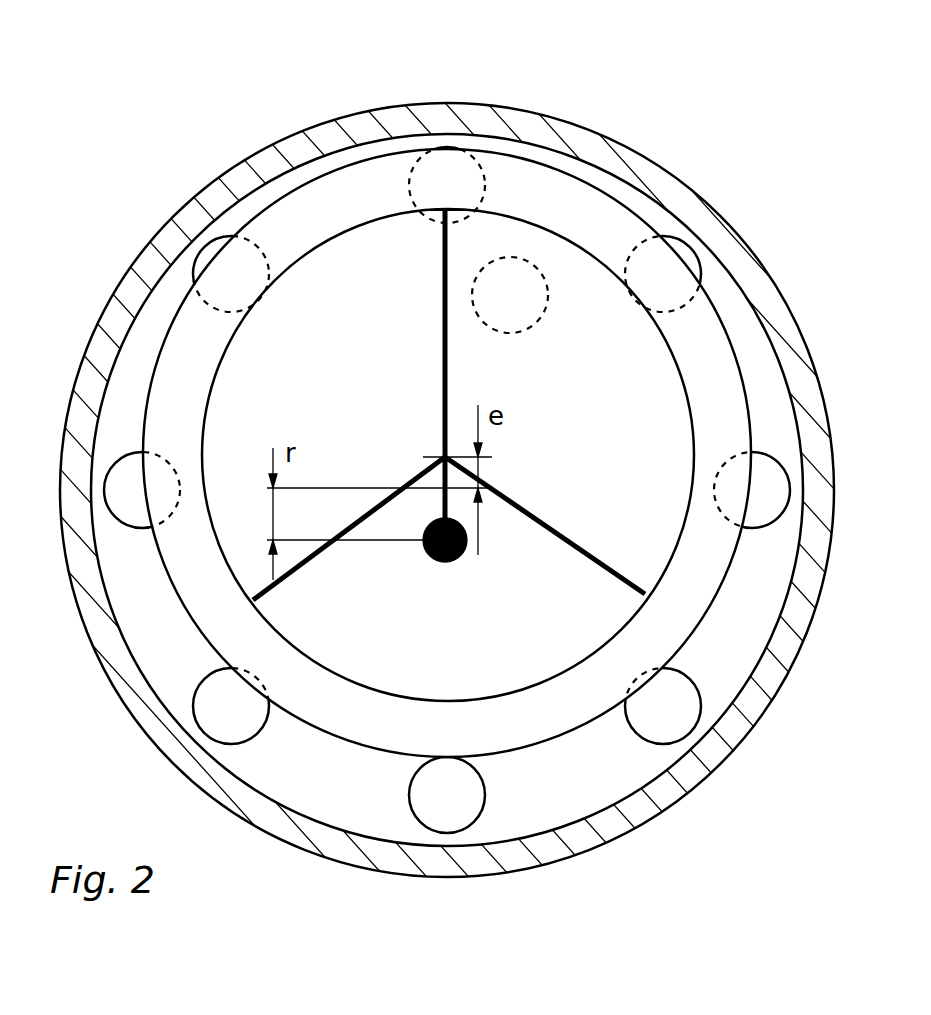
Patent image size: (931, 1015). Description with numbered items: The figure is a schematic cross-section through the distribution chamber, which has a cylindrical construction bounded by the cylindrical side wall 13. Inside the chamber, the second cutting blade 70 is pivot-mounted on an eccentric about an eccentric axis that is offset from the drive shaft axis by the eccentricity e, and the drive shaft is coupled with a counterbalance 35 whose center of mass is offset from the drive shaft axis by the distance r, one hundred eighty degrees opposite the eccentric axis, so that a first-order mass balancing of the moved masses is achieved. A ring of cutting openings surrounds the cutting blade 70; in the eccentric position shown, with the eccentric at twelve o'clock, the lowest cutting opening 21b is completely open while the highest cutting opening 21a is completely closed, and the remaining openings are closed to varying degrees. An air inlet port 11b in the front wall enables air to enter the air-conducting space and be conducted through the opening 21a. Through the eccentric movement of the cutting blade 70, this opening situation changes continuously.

The cylindrical side wall 13 is at (510, 123).
The second cutting blade 70 is at (357, 190).
The counterbalance 35 is at (437, 562).
The cutting opening 21a is at (455, 217).
The cutting opening 21b is at (445, 813).
The air inlet port 11b is at (520, 300).